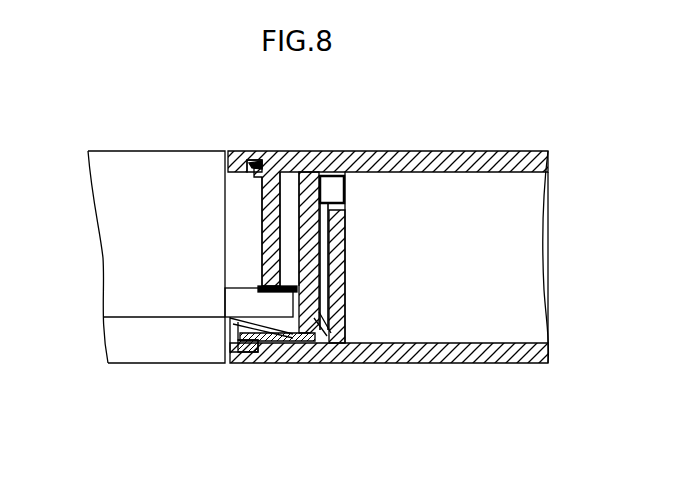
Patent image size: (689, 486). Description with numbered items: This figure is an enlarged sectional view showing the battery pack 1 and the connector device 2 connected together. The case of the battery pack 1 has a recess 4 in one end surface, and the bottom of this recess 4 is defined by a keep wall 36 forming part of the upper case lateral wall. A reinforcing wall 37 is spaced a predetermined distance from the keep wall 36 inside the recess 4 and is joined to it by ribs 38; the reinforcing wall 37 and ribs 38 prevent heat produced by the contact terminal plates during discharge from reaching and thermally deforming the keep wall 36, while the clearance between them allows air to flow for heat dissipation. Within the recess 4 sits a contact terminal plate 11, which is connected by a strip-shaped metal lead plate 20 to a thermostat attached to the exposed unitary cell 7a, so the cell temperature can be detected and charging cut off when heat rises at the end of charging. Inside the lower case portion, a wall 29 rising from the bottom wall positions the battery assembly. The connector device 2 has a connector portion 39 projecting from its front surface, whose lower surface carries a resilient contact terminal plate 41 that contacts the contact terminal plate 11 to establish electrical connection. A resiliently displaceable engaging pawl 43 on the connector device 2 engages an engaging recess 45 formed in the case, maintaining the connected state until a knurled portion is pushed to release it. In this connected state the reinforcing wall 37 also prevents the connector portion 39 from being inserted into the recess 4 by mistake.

The battery pack 1 is at (488, 151).
The connector device 2 is at (128, 149).
The recess 4 is at (236, 331).
The exposed unitary cell 7a is at (546, 285).
The contact terminal plate 11 is at (321, 338).
The metal lead plate 20 is at (330, 176).
The wall 29 is at (343, 230).
The keep wall 36 is at (290, 200).
The reinforcing wall 37 is at (262, 262).
The ribs 38 is at (303, 202).
The connector portion 39 is at (248, 290).
The contact terminal plate 41 is at (305, 337).
The engaging pawl 43 is at (248, 164).
The engaging recess 45 is at (261, 168).